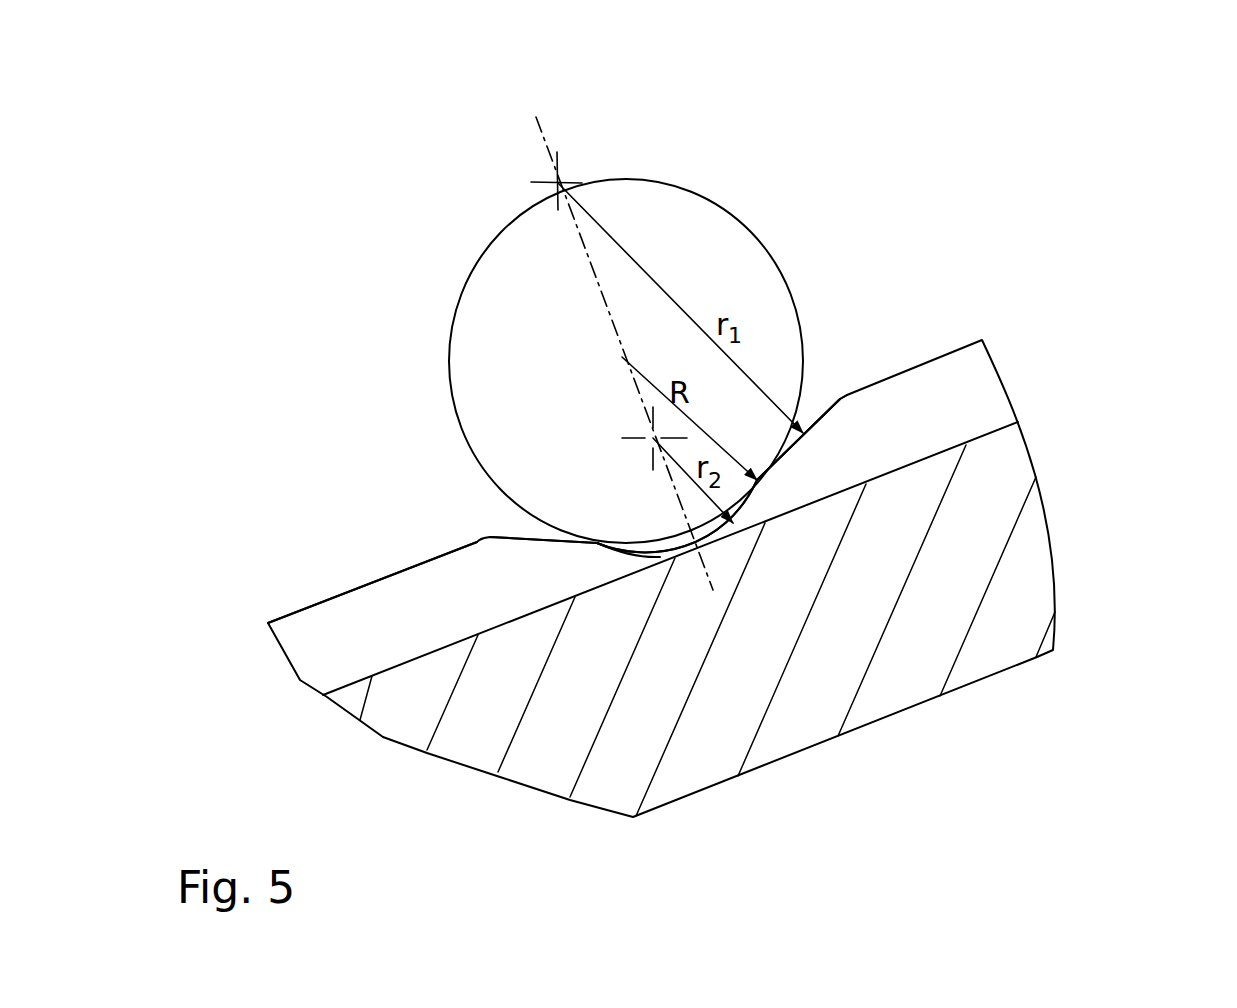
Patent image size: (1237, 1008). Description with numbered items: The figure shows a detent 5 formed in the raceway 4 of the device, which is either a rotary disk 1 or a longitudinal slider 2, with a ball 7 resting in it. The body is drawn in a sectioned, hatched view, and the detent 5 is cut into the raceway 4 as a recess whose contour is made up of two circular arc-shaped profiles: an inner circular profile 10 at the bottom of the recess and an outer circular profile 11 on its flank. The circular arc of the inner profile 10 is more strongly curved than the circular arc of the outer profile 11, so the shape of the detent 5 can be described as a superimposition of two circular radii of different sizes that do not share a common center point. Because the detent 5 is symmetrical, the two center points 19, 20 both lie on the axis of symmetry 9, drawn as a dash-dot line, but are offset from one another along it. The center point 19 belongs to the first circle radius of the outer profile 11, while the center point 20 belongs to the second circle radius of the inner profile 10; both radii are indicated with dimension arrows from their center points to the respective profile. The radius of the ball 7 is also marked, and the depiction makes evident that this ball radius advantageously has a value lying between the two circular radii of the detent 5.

The rotary disk 1 is at (752, 578).
The longitudinal slider 2 is at (1022, 570).
The raceway 4 is at (341, 594).
The detent 5 is at (466, 491).
The ball 7 is at (720, 206).
The axis of symmetry 9 is at (543, 128).
The inner circular profile 10 is at (628, 558).
The outer circular profile 11 is at (822, 426).
The center point of circle radius r1 19 is at (548, 188).
The center point of circle radius r2 20 is at (648, 443).